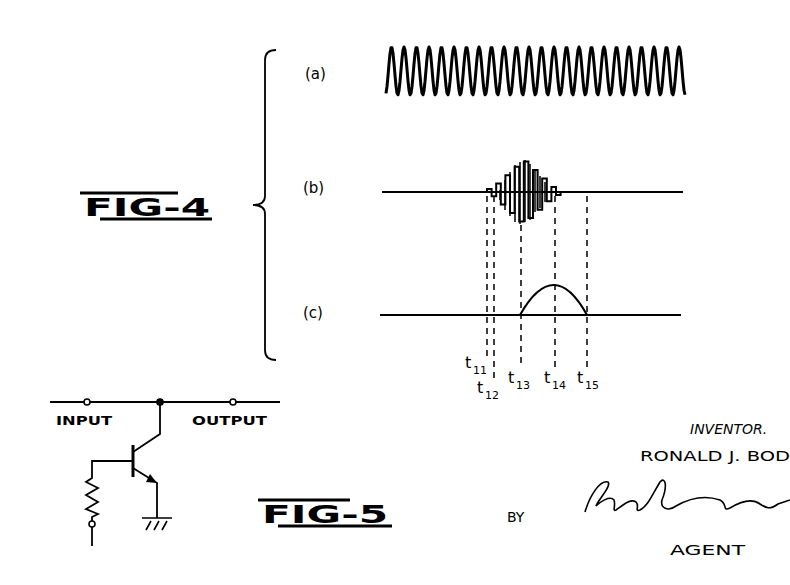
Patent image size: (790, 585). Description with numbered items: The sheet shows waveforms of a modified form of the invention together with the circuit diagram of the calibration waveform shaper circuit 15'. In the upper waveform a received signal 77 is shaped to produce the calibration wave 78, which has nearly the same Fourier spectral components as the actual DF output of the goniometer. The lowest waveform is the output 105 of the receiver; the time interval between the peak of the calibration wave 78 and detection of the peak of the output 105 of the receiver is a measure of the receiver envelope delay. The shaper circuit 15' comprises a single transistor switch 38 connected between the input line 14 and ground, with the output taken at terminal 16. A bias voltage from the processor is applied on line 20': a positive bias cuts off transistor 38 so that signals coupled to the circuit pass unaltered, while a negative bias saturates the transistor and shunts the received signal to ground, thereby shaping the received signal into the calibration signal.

In FIG. 4, the received signal 77 is at (577, 50).
In FIG. 4, the calibration wave 78 is at (540, 176).
In FIG. 4, the output of the receiver 105 is at (566, 293).
In FIG. 5, the line 14 is at (67, 400).
In FIG. 5, the output terminal 16 is at (259, 400).
In FIG. 5, the transistor switch 38 is at (146, 458).
In FIG. 5, the line 20' is at (80, 503).
In FIG. 5, the calibration waveform shaper circuit 15' is at (350, 430).